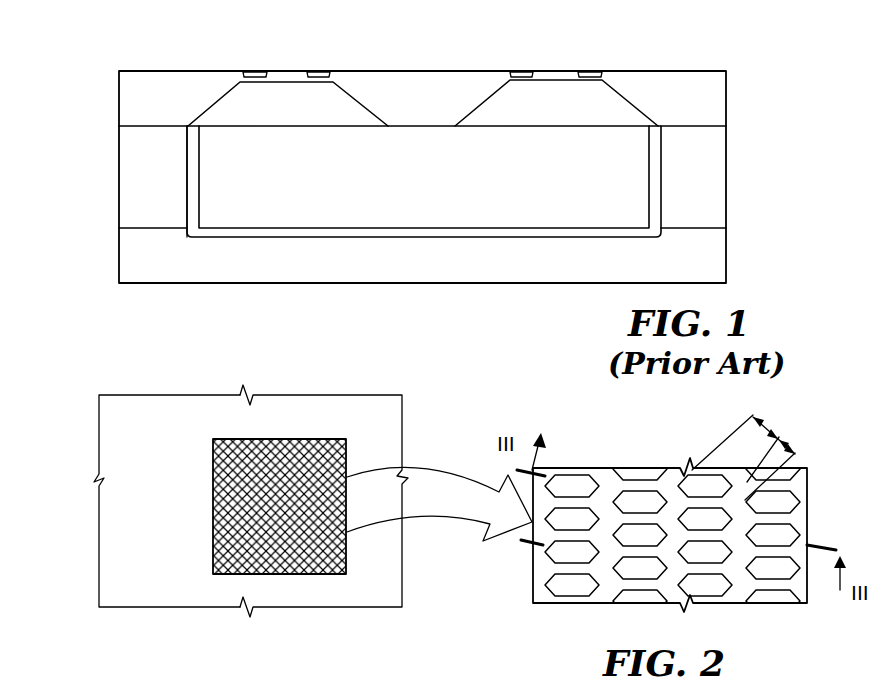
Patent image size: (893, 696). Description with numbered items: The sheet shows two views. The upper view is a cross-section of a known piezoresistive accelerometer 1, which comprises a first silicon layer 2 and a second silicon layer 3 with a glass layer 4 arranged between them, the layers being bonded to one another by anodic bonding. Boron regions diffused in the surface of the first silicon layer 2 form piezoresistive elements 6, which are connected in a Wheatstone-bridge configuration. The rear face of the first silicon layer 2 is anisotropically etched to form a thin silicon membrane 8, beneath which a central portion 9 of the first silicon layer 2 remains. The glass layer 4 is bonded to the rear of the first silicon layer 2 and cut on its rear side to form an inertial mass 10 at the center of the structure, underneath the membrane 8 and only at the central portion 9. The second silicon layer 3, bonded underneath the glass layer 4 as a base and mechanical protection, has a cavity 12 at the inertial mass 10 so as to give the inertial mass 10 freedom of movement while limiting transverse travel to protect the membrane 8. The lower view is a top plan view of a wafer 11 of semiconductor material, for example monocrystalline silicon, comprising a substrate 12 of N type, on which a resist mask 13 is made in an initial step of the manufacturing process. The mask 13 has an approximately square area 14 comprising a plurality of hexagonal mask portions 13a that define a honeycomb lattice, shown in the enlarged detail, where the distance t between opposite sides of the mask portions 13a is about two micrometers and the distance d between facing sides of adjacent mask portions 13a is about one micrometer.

In FIG. 1, the accelerometer 1 is at (781, 132).
In FIG. 1, the first silicon layer 2 is at (721, 93).
In FIG. 1, the second silicon layer 3 is at (708, 264).
In FIG. 1, the glass layer 4 is at (717, 172).
In FIG. 1, the piezoresistive elements 6 is at (588, 70).
In FIG. 1, the silicon membrane 8 is at (288, 62).
In FIG. 1, the central portion 9 is at (407, 113).
In FIG. 1, the inertial mass 10 is at (229, 218).
In FIG. 1, the cavity 12 is at (586, 220).
In FIG. 2, the cavity 12 is at (113, 551).
In FIG. 2, the wafer 11 is at (82, 441).
In FIG. 2, the resist mask 13 is at (292, 430).
In FIG. 2, the hexagonal mask portions 13a is at (715, 589).
In FIG. 2, the square area 14 is at (348, 561).
In FIG. 2, the distance between opposite sides of the mask portions t is at (762, 426).
In FIG. 2, the distance between facing sides of adjacent mask portions d is at (786, 445).